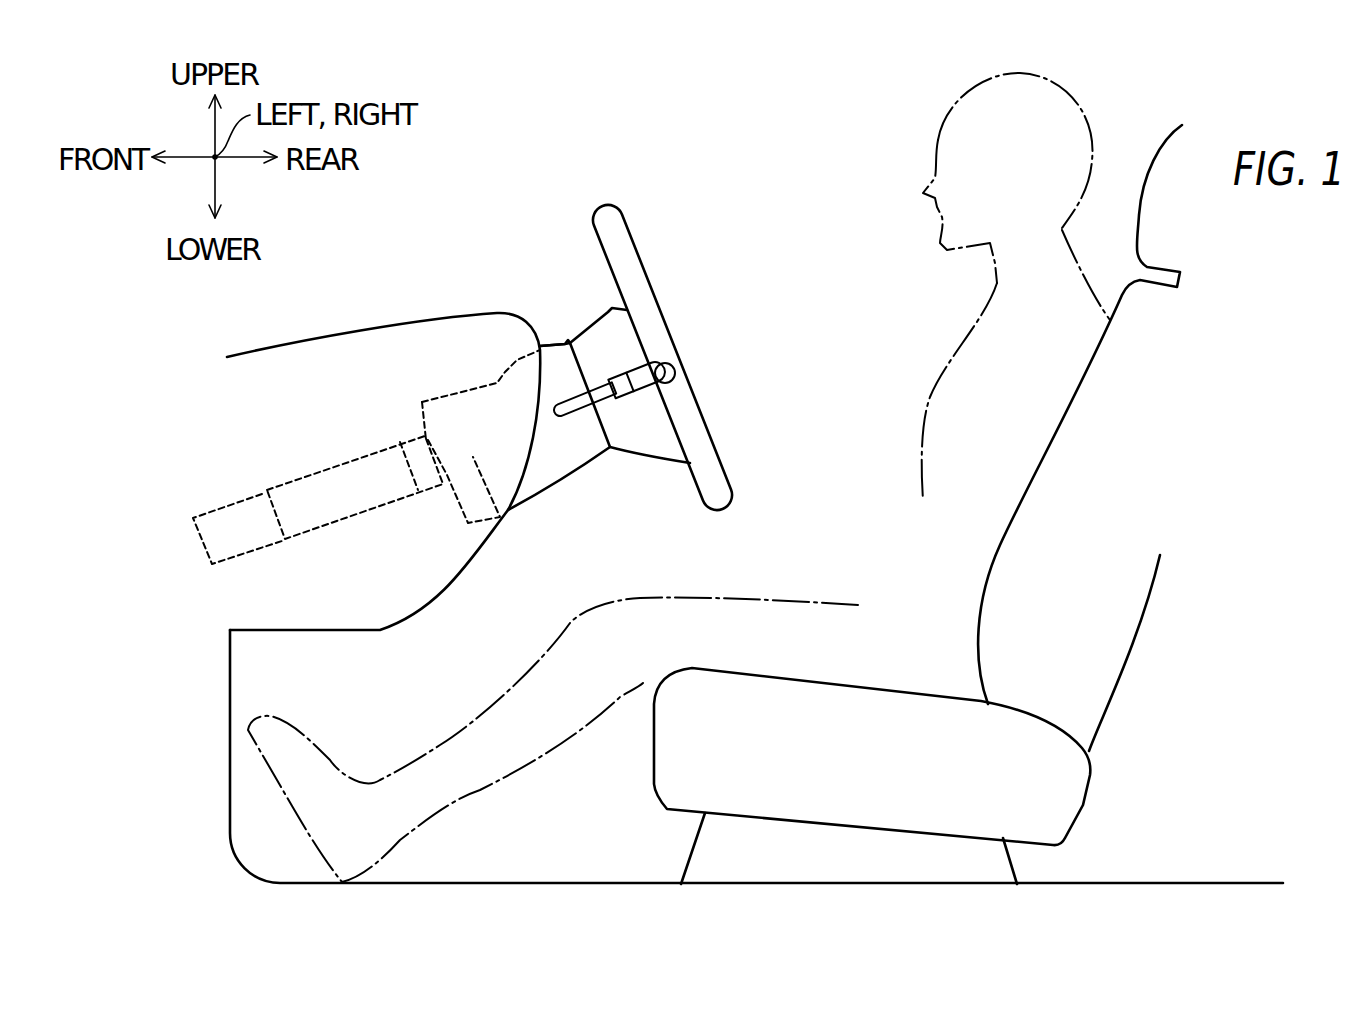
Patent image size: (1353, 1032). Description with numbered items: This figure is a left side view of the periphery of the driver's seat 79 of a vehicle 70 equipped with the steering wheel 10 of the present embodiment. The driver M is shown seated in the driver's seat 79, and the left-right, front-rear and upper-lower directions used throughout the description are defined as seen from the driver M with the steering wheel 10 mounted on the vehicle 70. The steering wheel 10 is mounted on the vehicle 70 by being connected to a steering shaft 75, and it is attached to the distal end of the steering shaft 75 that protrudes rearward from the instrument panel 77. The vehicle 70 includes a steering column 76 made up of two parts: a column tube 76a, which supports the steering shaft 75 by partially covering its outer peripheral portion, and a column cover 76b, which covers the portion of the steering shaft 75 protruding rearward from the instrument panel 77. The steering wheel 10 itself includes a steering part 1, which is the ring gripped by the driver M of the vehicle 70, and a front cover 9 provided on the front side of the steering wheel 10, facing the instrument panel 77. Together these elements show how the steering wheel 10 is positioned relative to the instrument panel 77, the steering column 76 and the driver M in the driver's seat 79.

The steering part 1 is at (662, 333).
The front cover 9 is at (637, 433).
The steering wheel 10 is at (607, 190).
The vehicle 70 is at (553, 100).
The steering shaft 75 is at (497, 520).
The steering column 76 is at (384, 386).
The column tube 76a is at (323, 467).
The column cover 76b is at (557, 363).
The instrument panel 77 is at (450, 337).
The driver's seat 79 is at (1093, 657).
The driver M is at (1043, 170).